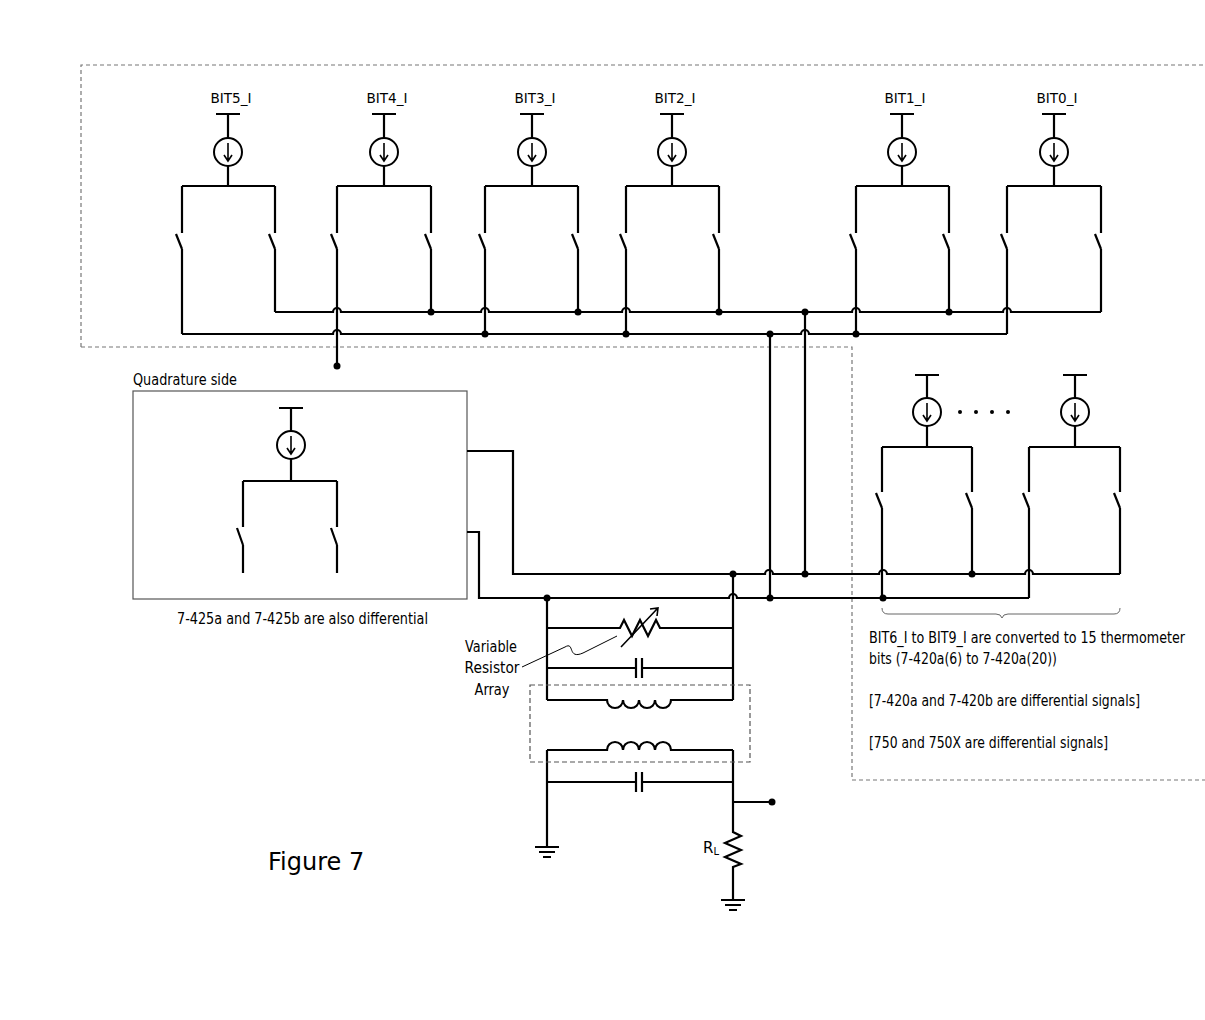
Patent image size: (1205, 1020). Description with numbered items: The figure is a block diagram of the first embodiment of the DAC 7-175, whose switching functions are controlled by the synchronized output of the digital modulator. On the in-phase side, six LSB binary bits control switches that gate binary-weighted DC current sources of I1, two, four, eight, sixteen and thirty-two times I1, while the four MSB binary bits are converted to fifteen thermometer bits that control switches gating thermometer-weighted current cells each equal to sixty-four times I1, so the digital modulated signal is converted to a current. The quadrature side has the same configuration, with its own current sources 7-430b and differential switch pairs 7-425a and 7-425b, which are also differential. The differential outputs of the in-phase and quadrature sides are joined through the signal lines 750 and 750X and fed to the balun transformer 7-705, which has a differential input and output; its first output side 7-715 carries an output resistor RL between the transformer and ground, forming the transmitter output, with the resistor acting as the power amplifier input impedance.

The DAC 7-175 is at (110, 37).
The quadrature-side current sources 7-430b is at (306, 446).
The quadrature-side switches 7-425b is at (240, 536).
The quadrature-side switches 7-425a is at (340, 535).
The signal line 750 is at (622, 573).
The signal line 750X is at (648, 596).
The balun transformer 7-705 is at (752, 725).
The first output side 7-715 is at (791, 802).